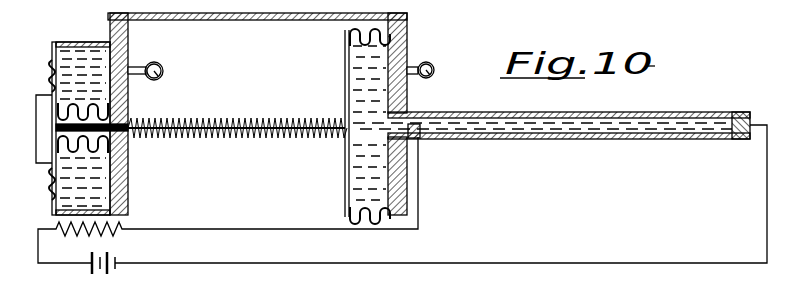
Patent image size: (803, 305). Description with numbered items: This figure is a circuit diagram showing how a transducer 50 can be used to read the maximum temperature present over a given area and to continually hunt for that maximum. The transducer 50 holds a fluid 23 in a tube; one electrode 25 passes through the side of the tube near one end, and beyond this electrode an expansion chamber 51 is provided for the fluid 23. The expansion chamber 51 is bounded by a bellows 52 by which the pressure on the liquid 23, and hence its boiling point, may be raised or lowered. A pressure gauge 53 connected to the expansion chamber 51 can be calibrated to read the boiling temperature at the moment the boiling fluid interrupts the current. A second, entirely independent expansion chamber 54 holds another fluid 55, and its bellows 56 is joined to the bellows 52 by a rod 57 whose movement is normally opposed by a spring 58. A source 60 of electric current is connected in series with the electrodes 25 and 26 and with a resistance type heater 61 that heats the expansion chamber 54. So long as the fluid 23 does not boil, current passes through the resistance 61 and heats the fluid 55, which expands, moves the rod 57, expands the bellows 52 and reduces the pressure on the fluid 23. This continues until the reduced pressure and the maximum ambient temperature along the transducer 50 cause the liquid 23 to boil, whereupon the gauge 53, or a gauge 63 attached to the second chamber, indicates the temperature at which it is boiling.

The fluid 23 is at (590, 138).
The electrode 25 is at (419, 138).
The electrode 26 is at (748, 118).
The transducer 50 is at (588, 112).
The expansion chamber 51 is at (360, 89).
The bellows 52 is at (356, 36).
The pressure gauge 53 is at (433, 66).
The second expansion chamber 54 is at (122, 106).
The fluid 55 is at (122, 181).
The bellows 56 is at (50, 71).
The rod 57 is at (256, 124).
The spring 58 is at (282, 134).
The source of electric current 60 is at (110, 271).
The resistance type heater 61 is at (60, 232).
The gauge 63 is at (162, 66).